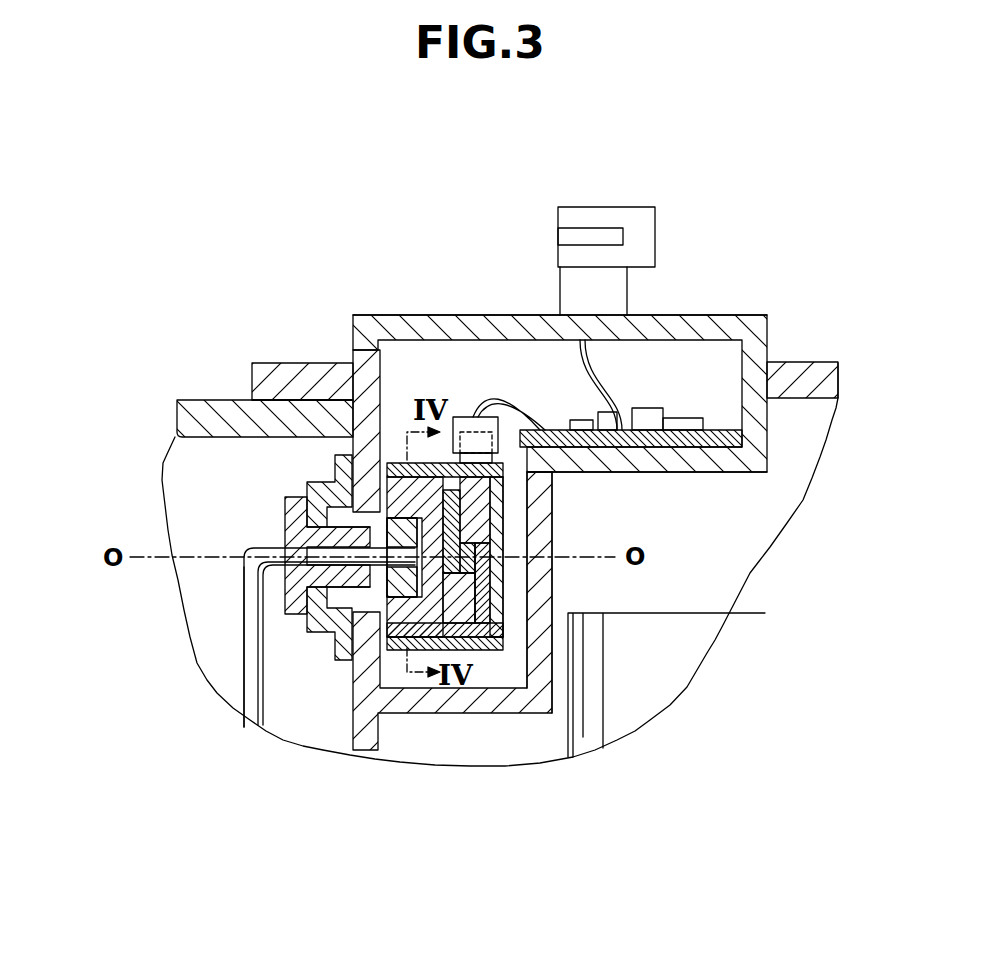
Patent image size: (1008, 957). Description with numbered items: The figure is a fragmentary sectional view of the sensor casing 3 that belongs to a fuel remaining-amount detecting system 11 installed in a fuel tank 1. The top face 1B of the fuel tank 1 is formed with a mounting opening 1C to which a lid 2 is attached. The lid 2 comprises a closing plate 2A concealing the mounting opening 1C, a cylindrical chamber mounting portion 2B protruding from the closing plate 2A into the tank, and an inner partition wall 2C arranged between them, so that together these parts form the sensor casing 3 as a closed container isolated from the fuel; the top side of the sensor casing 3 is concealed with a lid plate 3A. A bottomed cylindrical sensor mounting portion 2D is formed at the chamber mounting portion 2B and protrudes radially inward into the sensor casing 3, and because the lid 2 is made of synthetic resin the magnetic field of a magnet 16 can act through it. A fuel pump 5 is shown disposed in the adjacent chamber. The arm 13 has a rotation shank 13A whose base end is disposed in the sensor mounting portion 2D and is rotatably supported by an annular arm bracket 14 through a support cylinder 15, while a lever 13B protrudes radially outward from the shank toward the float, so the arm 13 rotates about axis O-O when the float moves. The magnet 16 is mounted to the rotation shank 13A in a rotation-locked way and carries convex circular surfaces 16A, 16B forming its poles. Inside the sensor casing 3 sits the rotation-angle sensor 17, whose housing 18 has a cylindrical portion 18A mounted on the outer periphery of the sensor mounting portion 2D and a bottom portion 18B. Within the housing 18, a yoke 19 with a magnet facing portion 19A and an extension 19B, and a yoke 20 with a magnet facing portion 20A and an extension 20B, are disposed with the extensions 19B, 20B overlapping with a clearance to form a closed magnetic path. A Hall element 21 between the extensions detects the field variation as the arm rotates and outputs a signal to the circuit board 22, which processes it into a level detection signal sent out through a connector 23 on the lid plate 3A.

The fuel tank 1 is at (205, 420).
The top face 1B is at (292, 422).
The mounting opening 1C is at (348, 445).
The lid 2 is at (787, 385).
The closing plate 2A is at (268, 380).
The chamber mounting portion 2B is at (363, 735).
The inner partition wall 2C is at (707, 457).
The sensor mounting portion 2D is at (347, 655).
The sensor casing 3 is at (540, 653).
The lid plate 3A is at (713, 332).
The fuel pump 5 is at (647, 668).
The fuel remaining-amount detecting system 11 is at (440, 308).
The arm 13 is at (252, 697).
The rotation shank 13A is at (285, 545).
The lever 13B is at (250, 593).
The arm bracket 14 is at (385, 605).
The support cylinder 15 is at (300, 600).
The magnet 16 is at (345, 540).
The convex circular surface 16A is at (363, 495).
The convex circular surface 16B is at (307, 613).
The rotation-angle sensor 17 is at (553, 732).
The housing 18 is at (520, 572).
The cylindrical portion 18A is at (472, 625).
The bottom portion 18B is at (470, 598).
The yoke 19 is at (455, 480).
The magnet facing portion 19A is at (396, 462).
The extension 19B is at (500, 500).
The yoke 20 is at (497, 650).
The magnet facing portion 20A is at (408, 650).
The extension 20B is at (482, 617).
The Hall element 21 is at (465, 540).
The circuit board 22 is at (565, 437).
The connector 23 is at (598, 222).